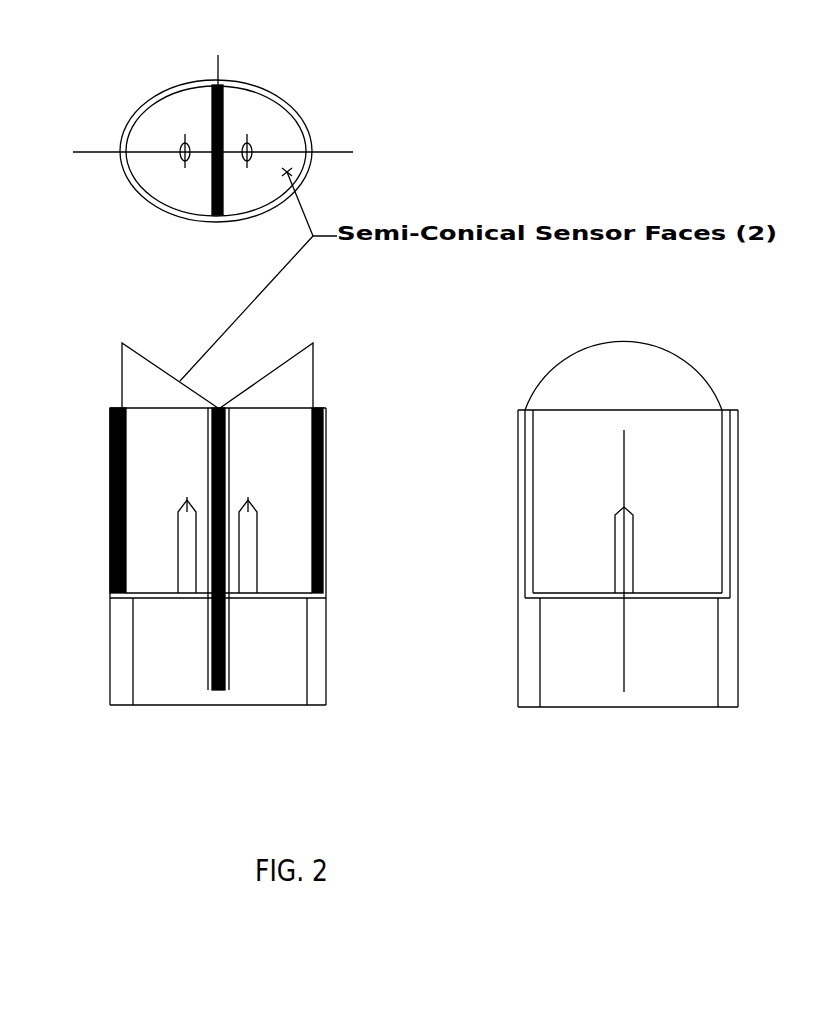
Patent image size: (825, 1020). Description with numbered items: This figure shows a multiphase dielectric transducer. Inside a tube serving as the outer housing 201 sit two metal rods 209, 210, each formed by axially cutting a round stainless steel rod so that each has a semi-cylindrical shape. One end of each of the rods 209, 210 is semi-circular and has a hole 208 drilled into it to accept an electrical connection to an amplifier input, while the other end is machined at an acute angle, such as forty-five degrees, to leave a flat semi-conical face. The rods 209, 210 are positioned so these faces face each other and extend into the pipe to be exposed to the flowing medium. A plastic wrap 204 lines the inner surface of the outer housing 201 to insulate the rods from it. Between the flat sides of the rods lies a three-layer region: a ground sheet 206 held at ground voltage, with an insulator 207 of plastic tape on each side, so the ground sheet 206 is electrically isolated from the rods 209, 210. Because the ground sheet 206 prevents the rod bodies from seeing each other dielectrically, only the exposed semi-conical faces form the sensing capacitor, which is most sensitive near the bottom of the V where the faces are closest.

The outer housing 201 is at (459, 507).
The plastic wrap 204 is at (313, 405).
The ground sheet 206 is at (440, 430).
The insulator 207 is at (407, 602).
The hole 208 is at (250, 597).
The rod 209 is at (170, 261).
The rod 210 is at (266, 261).